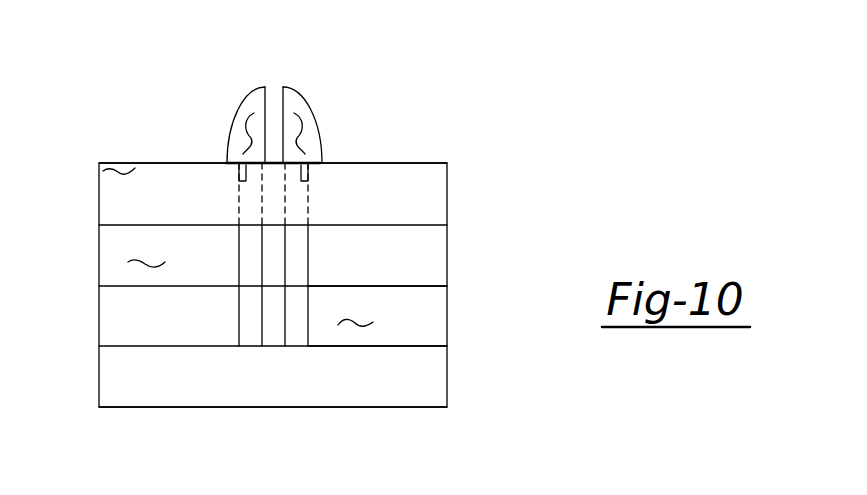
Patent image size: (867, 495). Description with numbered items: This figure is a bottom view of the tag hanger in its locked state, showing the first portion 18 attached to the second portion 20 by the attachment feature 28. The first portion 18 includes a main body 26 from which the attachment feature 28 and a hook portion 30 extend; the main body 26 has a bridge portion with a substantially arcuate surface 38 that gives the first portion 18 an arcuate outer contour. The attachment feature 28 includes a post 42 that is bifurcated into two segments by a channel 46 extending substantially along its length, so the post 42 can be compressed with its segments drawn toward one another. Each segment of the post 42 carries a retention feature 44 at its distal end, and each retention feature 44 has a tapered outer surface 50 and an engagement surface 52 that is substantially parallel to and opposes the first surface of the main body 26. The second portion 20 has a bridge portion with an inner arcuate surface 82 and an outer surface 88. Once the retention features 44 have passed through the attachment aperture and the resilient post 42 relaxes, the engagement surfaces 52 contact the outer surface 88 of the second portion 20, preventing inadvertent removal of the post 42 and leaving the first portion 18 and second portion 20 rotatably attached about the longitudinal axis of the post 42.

The first portion 18 is at (447, 380).
The second portion 20 is at (447, 192).
The main body 26 is at (416, 408).
The attachment feature 28 is at (239, 306).
The hook portion 30 is at (425, 325).
The substantially arcuate surface 38 is at (352, 330).
The post 42 is at (239, 98).
The retention feature 44 is at (264, 89).
The channel 46 is at (283, 252).
The tapered outer surface 50 is at (248, 136).
The engagement surface 52 is at (237, 182).
The inner arcuate surface 82 is at (136, 262).
The outer surface 88 is at (118, 170).